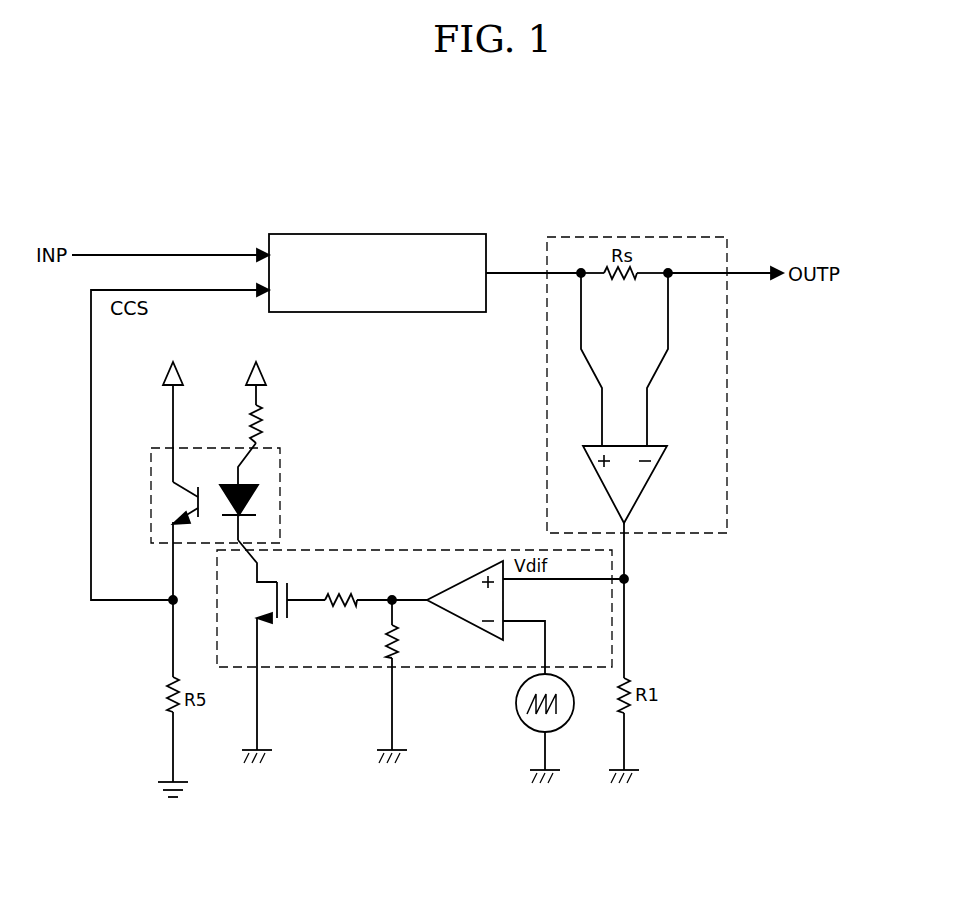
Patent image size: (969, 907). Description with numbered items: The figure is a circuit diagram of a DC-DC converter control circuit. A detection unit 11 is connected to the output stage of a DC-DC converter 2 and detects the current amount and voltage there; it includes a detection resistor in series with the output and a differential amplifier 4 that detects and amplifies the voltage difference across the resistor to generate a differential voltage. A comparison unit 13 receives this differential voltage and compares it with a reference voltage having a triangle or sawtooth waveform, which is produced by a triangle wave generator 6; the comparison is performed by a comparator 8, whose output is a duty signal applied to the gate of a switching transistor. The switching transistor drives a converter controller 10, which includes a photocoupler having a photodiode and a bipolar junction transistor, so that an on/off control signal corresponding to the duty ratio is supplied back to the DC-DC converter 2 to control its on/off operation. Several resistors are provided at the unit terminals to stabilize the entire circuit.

The DC-DC converter 2 is at (376, 234).
The differential amplifier 4 is at (648, 487).
The triangle wave generator 6 is at (519, 717).
The comparator 8 is at (464, 578).
The converter controller 10 is at (280, 493).
The detection unit 11 is at (669, 385).
The comparison unit 13 is at (612, 602).